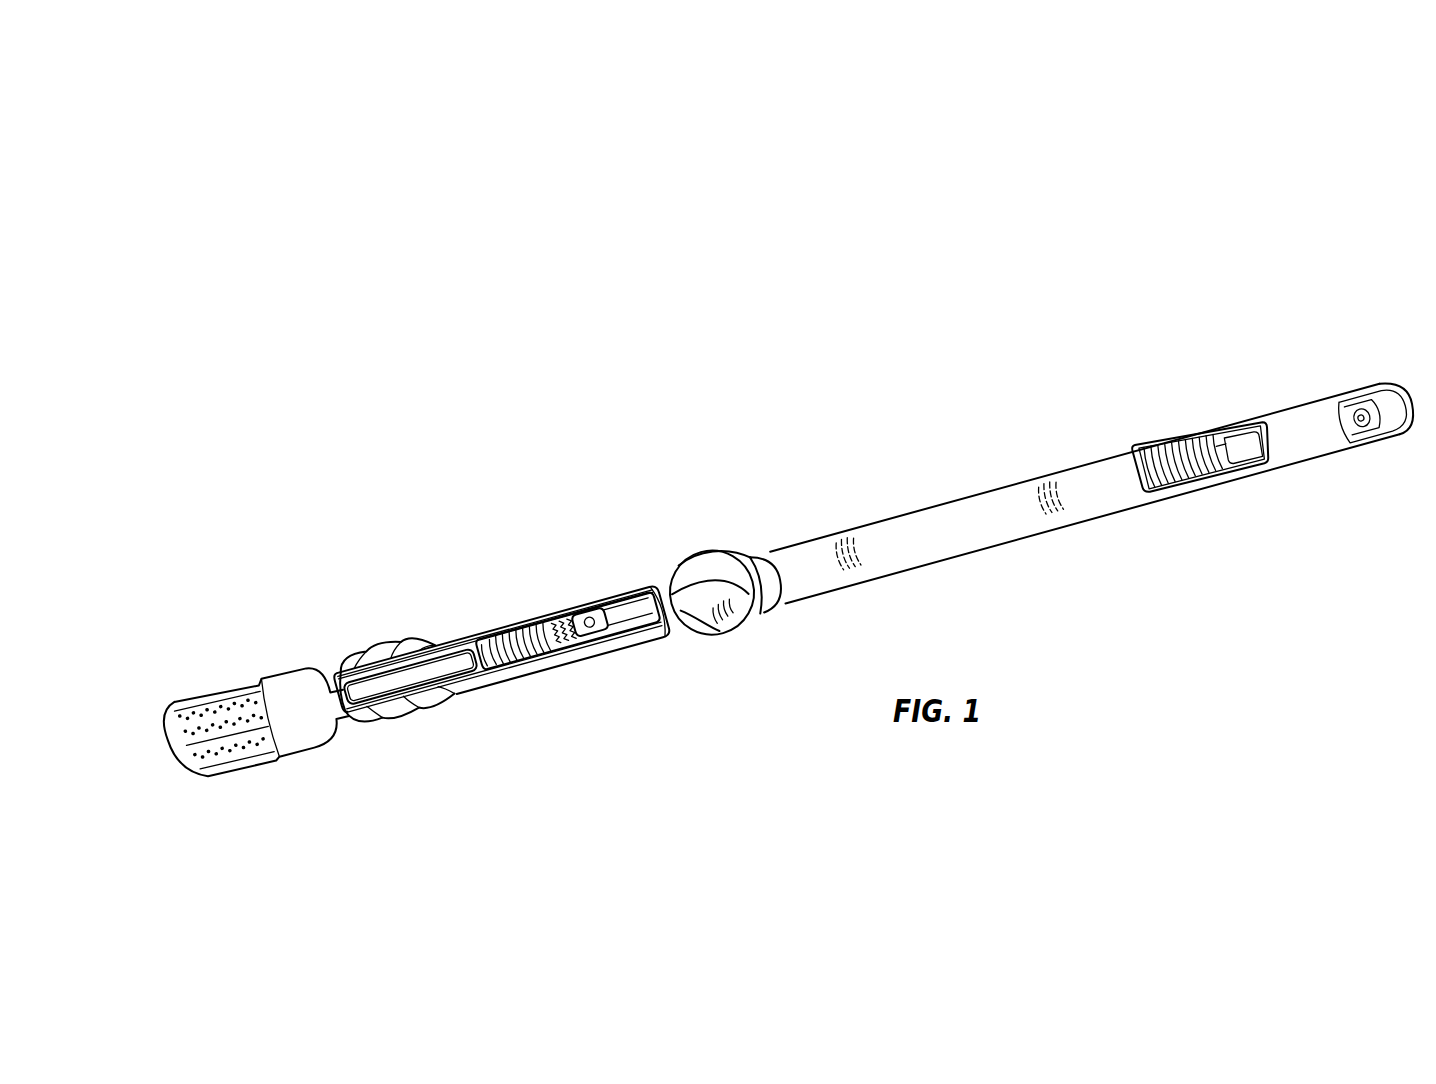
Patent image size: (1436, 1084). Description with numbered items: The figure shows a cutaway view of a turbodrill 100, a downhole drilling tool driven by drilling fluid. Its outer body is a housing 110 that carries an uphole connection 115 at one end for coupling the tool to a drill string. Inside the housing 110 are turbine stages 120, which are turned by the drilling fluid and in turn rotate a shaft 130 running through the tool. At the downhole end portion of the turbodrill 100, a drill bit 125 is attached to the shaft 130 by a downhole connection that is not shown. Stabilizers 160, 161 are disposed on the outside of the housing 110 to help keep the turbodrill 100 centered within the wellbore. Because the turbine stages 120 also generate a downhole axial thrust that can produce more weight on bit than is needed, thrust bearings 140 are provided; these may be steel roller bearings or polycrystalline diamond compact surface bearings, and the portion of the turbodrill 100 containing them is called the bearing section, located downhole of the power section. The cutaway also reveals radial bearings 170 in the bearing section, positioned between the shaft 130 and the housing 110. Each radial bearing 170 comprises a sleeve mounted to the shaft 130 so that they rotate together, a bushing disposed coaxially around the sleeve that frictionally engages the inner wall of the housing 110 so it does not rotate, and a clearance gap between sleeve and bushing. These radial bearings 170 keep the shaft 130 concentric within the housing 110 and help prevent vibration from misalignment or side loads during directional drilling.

The turbodrill 100 is at (198, 172).
The housing 110 is at (1093, 509).
The uphole connection 115 is at (1368, 392).
The turbine stages 120 is at (1204, 510).
The drill bit 125 is at (252, 772).
The shaft 130 is at (600, 652).
The thrust bearings 140 is at (524, 688).
The stabilizer 160 is at (703, 547).
The stabilizer 161 is at (394, 637).
The radial bearings 170 is at (368, 637).